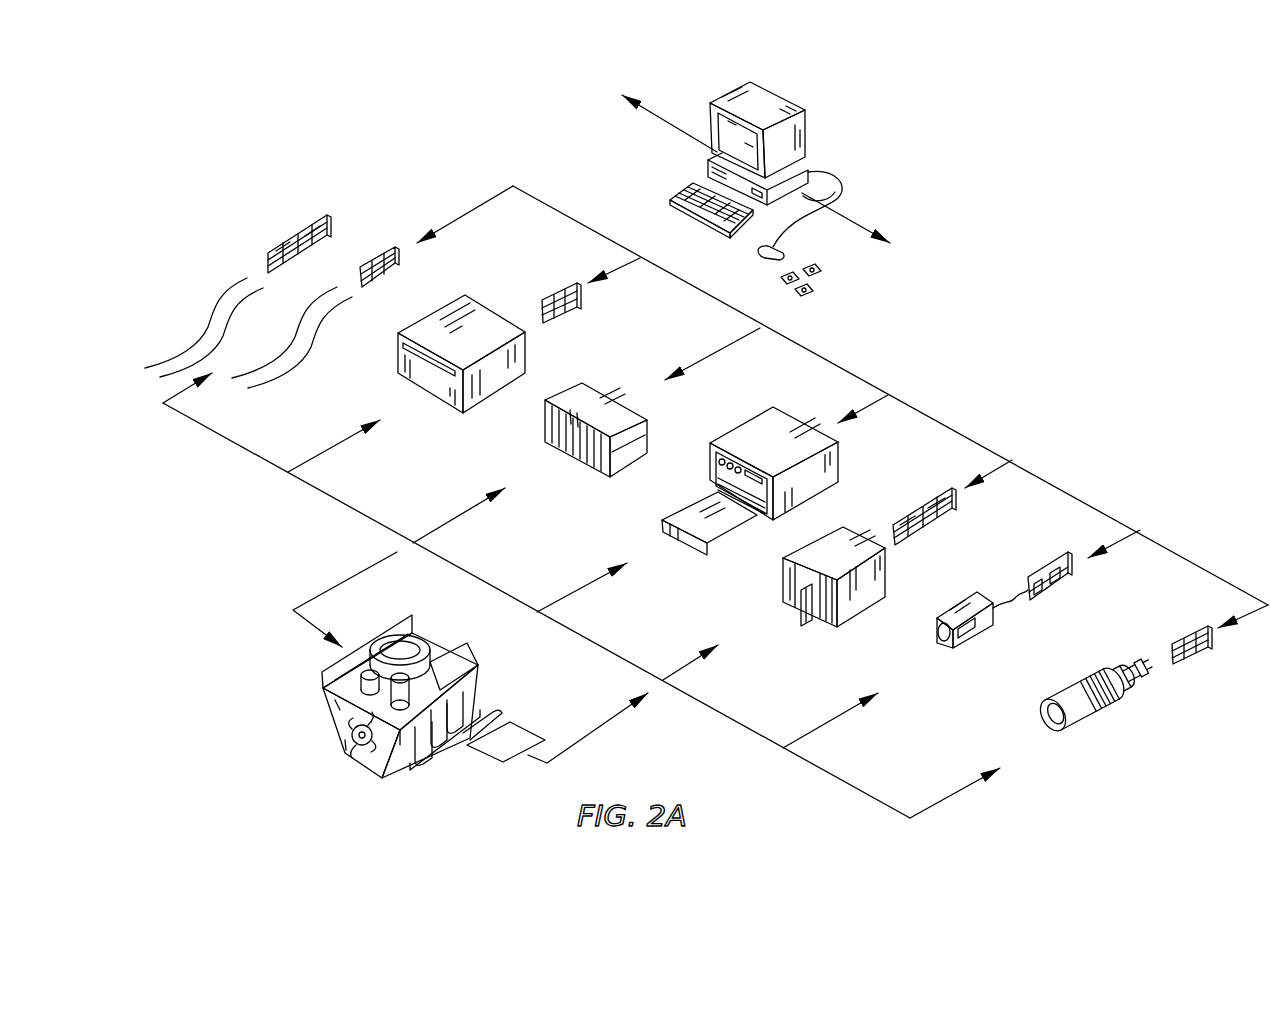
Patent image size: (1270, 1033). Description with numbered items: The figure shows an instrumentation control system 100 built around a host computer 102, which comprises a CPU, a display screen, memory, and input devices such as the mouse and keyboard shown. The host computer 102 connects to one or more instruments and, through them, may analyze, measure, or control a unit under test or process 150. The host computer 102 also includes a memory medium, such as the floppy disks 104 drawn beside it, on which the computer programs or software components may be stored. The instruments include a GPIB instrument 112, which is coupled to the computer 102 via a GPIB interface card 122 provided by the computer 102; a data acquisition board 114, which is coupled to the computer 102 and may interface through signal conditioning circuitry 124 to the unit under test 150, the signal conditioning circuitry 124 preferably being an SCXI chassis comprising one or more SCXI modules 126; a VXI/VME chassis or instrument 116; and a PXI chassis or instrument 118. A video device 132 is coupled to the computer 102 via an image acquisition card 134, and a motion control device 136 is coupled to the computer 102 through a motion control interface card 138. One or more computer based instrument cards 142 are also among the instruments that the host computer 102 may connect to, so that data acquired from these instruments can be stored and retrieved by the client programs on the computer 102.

The instrumentation control system 100 is at (715, 446).
The host computer 102 is at (758, 165).
The floppy disks 104 is at (849, 307).
The GPIB instrument 112 is at (442, 328).
The data acquisition board 114 is at (1018, 455).
The VXI/VME chassis or instrument 116 is at (753, 435).
The PXI chassis or instrument 118 is at (596, 401).
The GPIB interface card 122 is at (539, 281).
The signal conditioning circuitry 124 is at (783, 577).
The SCXI module 126 is at (788, 620).
The video device 132 is at (958, 661).
The image acquisition card 134 is at (1026, 572).
The motion control device 136 is at (1136, 715).
The motion control interface card 138 is at (1217, 658).
The computer based instrument card 142 is at (248, 268).
The unit under test or process 150 is at (404, 696).